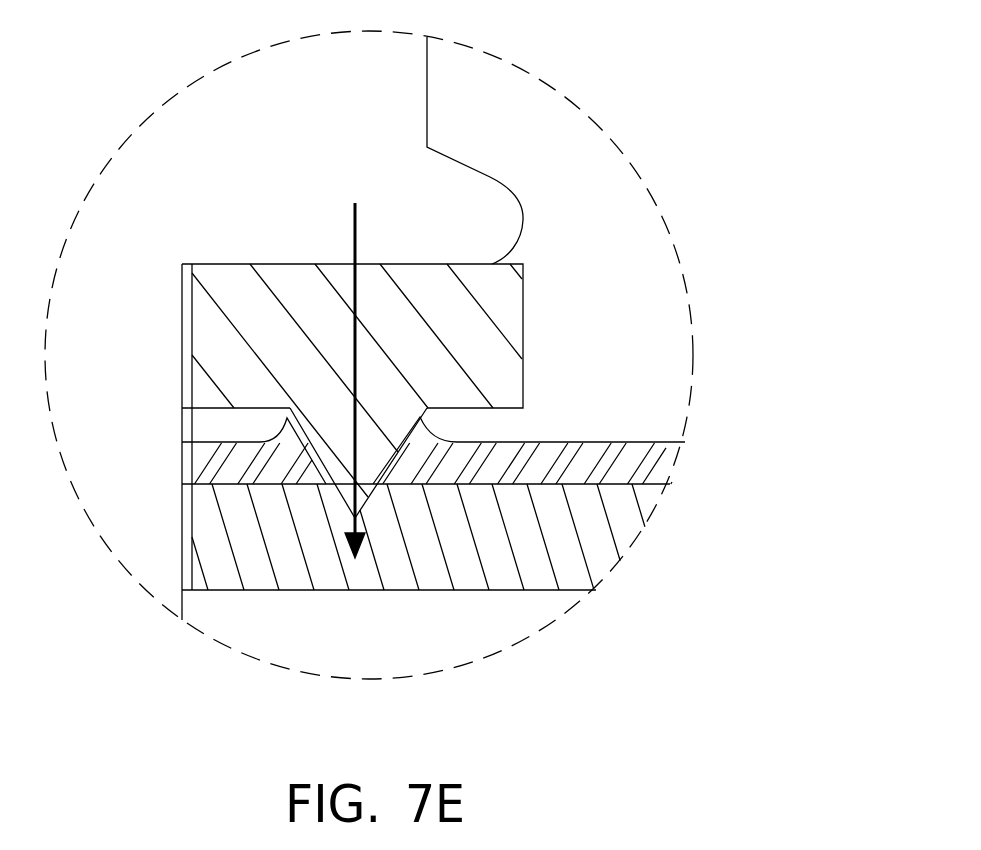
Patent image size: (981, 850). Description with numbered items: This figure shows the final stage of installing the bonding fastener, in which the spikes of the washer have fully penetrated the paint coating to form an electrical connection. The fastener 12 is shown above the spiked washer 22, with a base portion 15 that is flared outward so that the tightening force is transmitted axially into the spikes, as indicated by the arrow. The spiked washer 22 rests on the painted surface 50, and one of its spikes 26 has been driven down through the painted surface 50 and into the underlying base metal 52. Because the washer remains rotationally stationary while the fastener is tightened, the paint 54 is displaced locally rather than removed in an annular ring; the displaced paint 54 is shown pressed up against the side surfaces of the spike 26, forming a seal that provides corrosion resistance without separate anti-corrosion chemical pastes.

The fastener 12 is at (427, 63).
The base portion 15 is at (492, 210).
The spiked washer 22 is at (523, 330).
The spikes 26 is at (343, 492).
The paint 54 is at (437, 426).
The painted surface 50 is at (638, 462).
The base metal 52 is at (600, 542).